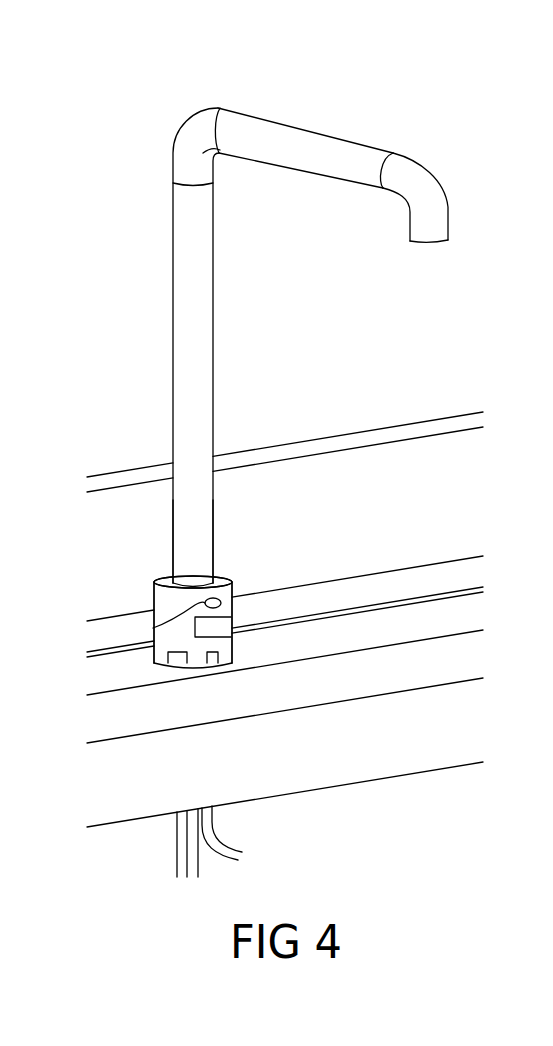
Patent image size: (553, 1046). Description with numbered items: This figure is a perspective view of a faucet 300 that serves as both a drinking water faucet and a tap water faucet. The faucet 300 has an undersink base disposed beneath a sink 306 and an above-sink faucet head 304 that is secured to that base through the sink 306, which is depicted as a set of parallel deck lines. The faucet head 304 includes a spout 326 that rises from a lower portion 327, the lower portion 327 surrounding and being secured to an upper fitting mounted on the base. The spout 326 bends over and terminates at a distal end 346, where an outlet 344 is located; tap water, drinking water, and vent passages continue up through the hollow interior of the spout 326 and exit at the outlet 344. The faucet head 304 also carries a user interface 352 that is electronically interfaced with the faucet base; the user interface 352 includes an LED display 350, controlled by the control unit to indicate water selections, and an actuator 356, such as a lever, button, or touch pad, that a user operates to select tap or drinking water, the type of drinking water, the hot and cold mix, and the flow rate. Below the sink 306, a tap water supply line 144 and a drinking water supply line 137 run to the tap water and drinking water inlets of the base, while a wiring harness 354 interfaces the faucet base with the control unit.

The faucet 300 is at (167, 99).
The spout 326 is at (295, 128).
The distal end 346 is at (448, 240).
The outlet 344 is at (430, 243).
The lower portion 327 is at (142, 566).
The faucet head 304 is at (245, 545).
The user interface 352 is at (250, 568).
The LED display 350 is at (235, 622).
The sink 306 is at (372, 600).
The actuator 356 is at (153, 628).
The wiring harness 354 is at (233, 850).
The tap water supply line 144 is at (175, 850).
The drinking water supply line 137 is at (199, 862).